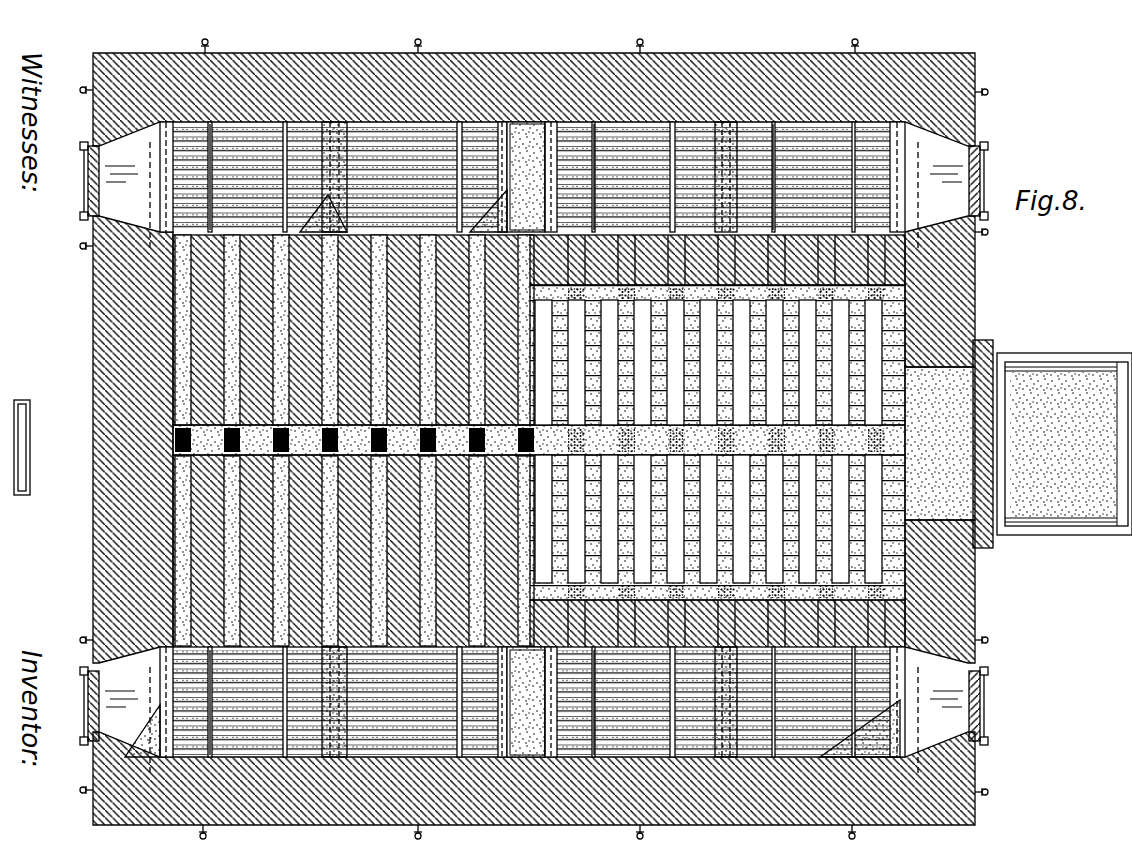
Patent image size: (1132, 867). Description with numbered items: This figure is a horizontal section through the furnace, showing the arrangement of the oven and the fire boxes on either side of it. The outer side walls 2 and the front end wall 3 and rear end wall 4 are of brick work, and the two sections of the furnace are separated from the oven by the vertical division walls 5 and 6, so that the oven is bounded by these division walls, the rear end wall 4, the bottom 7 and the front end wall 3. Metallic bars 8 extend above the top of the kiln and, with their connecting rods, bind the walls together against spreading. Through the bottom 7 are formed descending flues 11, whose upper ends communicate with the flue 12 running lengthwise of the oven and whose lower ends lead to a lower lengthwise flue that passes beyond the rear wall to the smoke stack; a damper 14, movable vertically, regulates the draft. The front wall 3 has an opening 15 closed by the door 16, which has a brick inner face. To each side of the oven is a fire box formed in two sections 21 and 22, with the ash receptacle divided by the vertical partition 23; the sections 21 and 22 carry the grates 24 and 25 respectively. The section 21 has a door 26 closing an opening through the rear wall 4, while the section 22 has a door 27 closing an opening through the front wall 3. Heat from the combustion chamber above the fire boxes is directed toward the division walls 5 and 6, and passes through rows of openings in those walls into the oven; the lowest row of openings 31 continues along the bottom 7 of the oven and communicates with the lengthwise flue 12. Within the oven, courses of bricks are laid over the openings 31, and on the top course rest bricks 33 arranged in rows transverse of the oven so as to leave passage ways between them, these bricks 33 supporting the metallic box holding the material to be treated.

The outer side walls 2 is at (527, 62).
The front end wall 3 is at (976, 283).
The rear end wall 4 is at (102, 297).
The vertical division wall 5 is at (885, 265).
The vertical division wall 6 is at (907, 617).
The bottom 7 is at (200, 566).
The metallic bars 8 is at (412, 45).
The descending flues 11 is at (178, 452).
The lengthwise flue 12 is at (178, 434).
The damper 14 is at (22, 398).
The opening 15 is at (977, 549).
The door 16 is at (996, 351).
The fire box section 21 is at (253, 127).
The fire box section 22 is at (765, 127).
The vertical partition 23 is at (532, 140).
The grate 24 is at (220, 130).
The grate 25 is at (868, 133).
The door 26 is at (87, 176).
The door 27 is at (982, 168).
The openings 31 is at (176, 259).
The bricks 33 is at (882, 325).